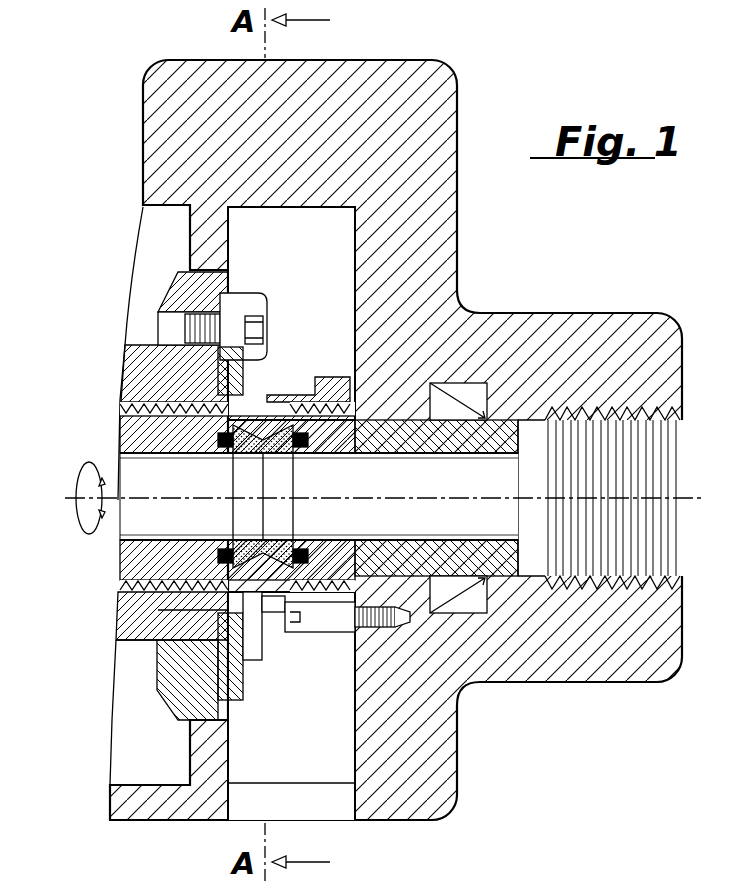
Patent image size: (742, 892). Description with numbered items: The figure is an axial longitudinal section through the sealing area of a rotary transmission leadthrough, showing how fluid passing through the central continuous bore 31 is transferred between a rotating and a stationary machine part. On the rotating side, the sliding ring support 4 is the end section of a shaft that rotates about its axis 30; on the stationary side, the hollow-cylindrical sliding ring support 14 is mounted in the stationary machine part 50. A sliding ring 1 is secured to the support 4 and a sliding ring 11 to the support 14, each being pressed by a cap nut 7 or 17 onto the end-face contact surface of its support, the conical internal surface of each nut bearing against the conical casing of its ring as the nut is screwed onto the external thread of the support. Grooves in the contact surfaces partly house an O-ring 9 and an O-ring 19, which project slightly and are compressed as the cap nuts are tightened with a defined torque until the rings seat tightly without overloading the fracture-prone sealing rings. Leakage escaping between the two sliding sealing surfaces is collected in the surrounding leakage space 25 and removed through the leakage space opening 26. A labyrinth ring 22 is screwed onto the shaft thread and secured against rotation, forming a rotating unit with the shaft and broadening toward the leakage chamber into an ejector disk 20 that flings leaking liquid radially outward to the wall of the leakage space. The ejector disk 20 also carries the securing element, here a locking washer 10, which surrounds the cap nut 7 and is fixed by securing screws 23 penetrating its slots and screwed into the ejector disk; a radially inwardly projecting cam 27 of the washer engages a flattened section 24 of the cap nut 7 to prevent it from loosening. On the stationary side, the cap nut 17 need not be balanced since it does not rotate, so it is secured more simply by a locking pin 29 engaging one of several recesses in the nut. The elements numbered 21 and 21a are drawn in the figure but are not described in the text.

The sliding ring 1 is at (252, 590).
The sliding ring support 4 is at (148, 553).
The cap nut 7 is at (170, 612).
The O-ring 9 is at (200, 548).
The locking washer 10 is at (228, 700).
The sliding ring 11 is at (270, 612).
The sliding ring support 14 is at (500, 560).
The cap nut 17 is at (326, 375).
The O-ring 19 is at (328, 548).
The ejector disk 20 is at (178, 697).
The insert sleeve 21 is at (178, 431).
The thread of insert sleeve 21a is at (118, 399).
The labyrinth ring 22 is at (232, 372).
The securing screw 23 is at (262, 300).
The flattened section 24 is at (260, 395).
The leakage space 25 is at (340, 245).
The leakage space opening 26 is at (338, 805).
The cam 27 is at (200, 352).
The locking pin 29 is at (320, 615).
The axis 30 is at (705, 498).
The central bore 31 is at (436, 507).
The stationary machine part 50 is at (625, 340).